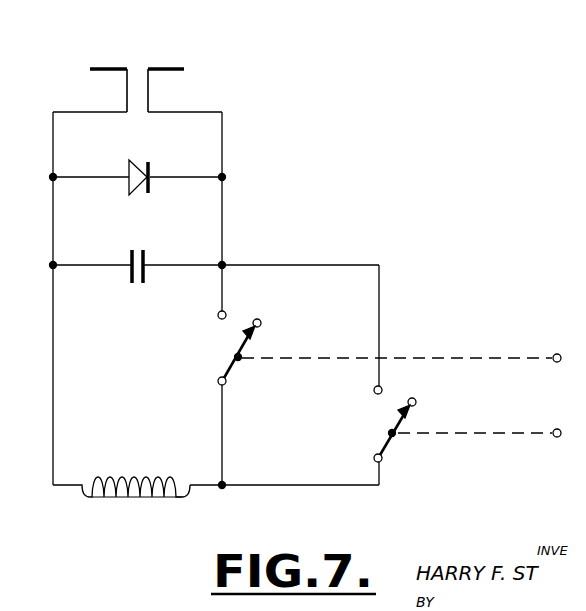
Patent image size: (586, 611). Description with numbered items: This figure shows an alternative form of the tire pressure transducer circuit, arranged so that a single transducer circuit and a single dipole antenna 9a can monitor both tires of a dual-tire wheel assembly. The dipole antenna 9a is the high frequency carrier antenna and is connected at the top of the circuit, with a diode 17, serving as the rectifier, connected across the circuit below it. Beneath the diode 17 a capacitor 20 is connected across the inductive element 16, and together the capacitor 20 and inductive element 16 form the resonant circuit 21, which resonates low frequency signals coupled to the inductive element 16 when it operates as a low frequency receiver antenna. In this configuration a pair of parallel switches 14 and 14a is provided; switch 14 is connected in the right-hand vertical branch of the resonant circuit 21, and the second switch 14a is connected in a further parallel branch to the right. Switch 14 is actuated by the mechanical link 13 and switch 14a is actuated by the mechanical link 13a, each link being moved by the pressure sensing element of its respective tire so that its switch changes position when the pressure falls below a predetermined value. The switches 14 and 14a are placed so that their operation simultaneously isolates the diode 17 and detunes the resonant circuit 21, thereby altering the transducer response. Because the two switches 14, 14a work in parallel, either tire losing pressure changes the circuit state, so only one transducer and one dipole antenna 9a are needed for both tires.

The dipole antenna 9a is at (136, 66).
The diode 17 is at (150, 170).
The capacitor 20 is at (146, 252).
The resonant circuit 21 is at (148, 409).
The inductive element 16 is at (135, 500).
The switch blade 14 is at (232, 362).
The switch 14a is at (385, 440).
The mechanical link 13 is at (490, 355).
The mechanical link 13a is at (490, 438).